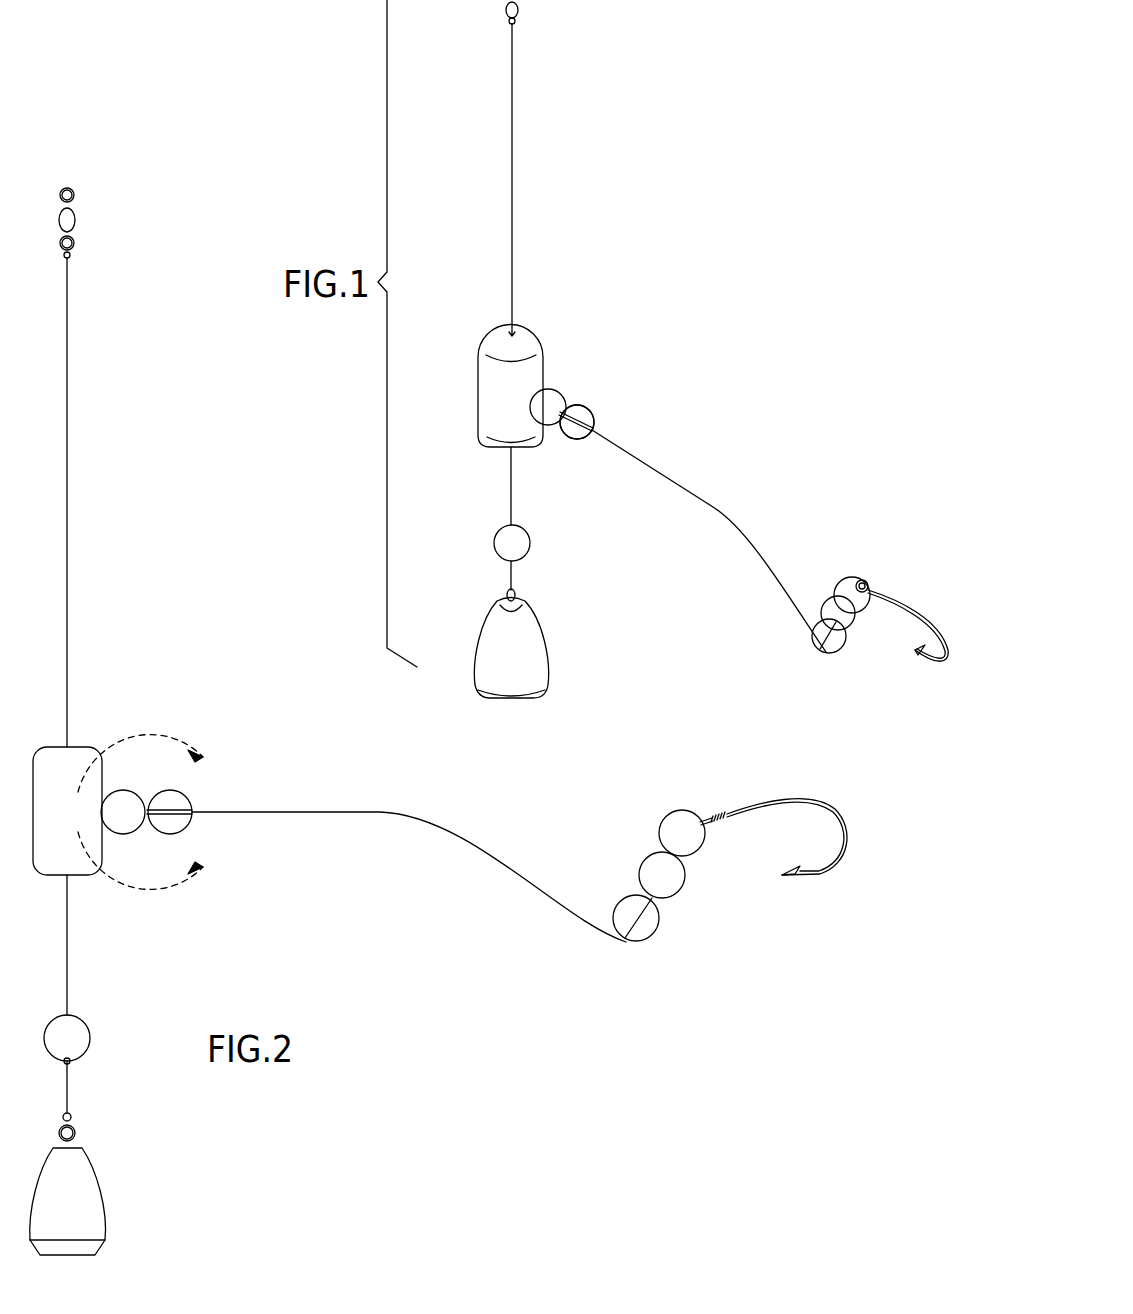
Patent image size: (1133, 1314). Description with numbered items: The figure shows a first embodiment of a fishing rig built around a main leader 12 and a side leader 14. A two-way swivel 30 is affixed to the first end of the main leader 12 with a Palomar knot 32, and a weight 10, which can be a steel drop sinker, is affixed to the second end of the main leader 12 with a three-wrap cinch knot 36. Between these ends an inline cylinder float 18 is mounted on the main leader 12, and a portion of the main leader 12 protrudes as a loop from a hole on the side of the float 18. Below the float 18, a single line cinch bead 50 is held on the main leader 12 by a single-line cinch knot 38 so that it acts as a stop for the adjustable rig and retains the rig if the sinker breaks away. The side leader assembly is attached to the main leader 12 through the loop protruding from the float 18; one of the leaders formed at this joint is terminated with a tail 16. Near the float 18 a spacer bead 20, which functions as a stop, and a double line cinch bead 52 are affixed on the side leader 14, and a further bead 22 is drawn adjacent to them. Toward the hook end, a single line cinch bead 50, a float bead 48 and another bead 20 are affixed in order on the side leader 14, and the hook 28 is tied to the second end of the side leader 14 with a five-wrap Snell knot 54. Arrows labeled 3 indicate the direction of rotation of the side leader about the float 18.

In FIG. 1, the weight 10 is at (500, 626).
In FIG. 2, the weight 10 is at (80, 1172).
In FIG. 1, the main leader 12 is at (505, 212).
In FIG. 2, the main leader 12 is at (80, 530).
In FIG. 1, the side leader 14 is at (715, 507).
In FIG. 2, the side leader 14 is at (385, 815).
In FIG. 1, the tail 16 is at (581, 442).
In FIG. 2, the tail 16 is at (190, 805).
In FIG. 1, the inline cylinder float 18 is at (485, 388).
In FIG. 2, the inline cylinder float 18 is at (75, 880).
In FIG. 1, the bead 20 is at (555, 396).
In FIG. 2, the bead 20 is at (125, 800).
In FIG. 1, the bead 22 is at (568, 411).
In FIG. 1, the hook 28 is at (893, 603).
In FIG. 2, the hook 28 is at (762, 800).
In FIG. 1, the two-way swivel 30 is at (497, 5).
In FIG. 2, the two-way swivel 30 is at (72, 220).
In FIG. 1, the Palomar knot 32 is at (517, 24).
In FIG. 2, the Palomar knot 32 is at (72, 258).
In FIG. 2, the three-wrap cinch knot 36 is at (75, 1120).
In FIG. 2, the single-line cinch knot 38 is at (70, 1063).
In FIG. 2, the rotation direction arrow 3 is at (147, 808).
In FIG. 1, the float bead 48 is at (833, 612).
In FIG. 2, the float bead 48 is at (672, 885).
In FIG. 1, the single line cinch bead 50 is at (503, 541).
In FIG. 2, the single line cinch bead 50 is at (75, 1030).
In FIG. 1, the double line cinch bead 52 is at (597, 412).
In FIG. 2, the double line cinch bead 52 is at (185, 826).
In FIG. 1, the five-wrap Snell knot 54 is at (870, 588).
In FIG. 2, the five-wrap Snell knot 54 is at (720, 826).